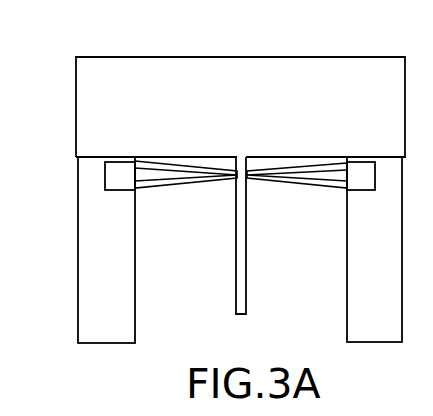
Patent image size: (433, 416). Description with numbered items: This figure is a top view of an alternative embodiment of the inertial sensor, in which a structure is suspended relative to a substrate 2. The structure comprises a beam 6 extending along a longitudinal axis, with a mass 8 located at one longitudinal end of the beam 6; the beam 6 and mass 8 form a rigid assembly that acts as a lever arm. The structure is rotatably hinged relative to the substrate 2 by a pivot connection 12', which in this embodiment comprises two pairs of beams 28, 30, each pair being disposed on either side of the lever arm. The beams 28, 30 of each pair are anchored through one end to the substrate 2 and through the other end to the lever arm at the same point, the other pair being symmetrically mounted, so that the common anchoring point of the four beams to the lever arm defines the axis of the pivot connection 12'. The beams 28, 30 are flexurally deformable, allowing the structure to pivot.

The substrate 2 is at (210, 174).
The mass 8 is at (380, 62).
The beam 6 is at (243, 296).
The beam of pivot connection pair 28 is at (176, 196).
The pivot connection 12' is at (297, 197).
The beam of pivot connection pair 30 is at (241, 143).